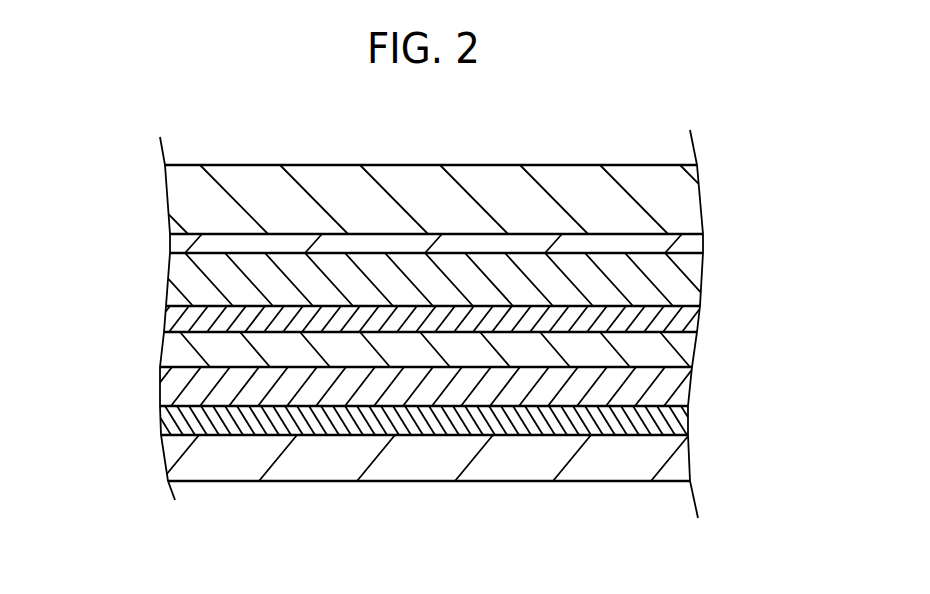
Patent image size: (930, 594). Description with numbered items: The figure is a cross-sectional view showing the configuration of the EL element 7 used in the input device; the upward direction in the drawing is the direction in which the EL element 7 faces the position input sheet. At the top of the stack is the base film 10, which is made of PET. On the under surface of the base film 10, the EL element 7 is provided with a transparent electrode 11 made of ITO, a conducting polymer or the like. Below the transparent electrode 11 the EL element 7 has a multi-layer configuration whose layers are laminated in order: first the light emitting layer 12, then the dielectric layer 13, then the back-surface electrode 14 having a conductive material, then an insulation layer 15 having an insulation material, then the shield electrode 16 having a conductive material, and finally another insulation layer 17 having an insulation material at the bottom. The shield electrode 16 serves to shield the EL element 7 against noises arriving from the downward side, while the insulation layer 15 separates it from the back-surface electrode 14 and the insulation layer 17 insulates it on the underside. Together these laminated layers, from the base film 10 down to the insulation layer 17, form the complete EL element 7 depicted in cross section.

The EL element 7 is at (470, 492).
The base film 10 is at (687, 205).
The transparent electrode 11 is at (180, 245).
The light emitting layer 12 is at (693, 273).
The dielectric layer 13 is at (180, 320).
The back-surface electrode 14 is at (681, 347).
The insulation layer 15 is at (175, 388).
The shield electrode 16 is at (678, 420).
The insulation layer 17 is at (175, 458).